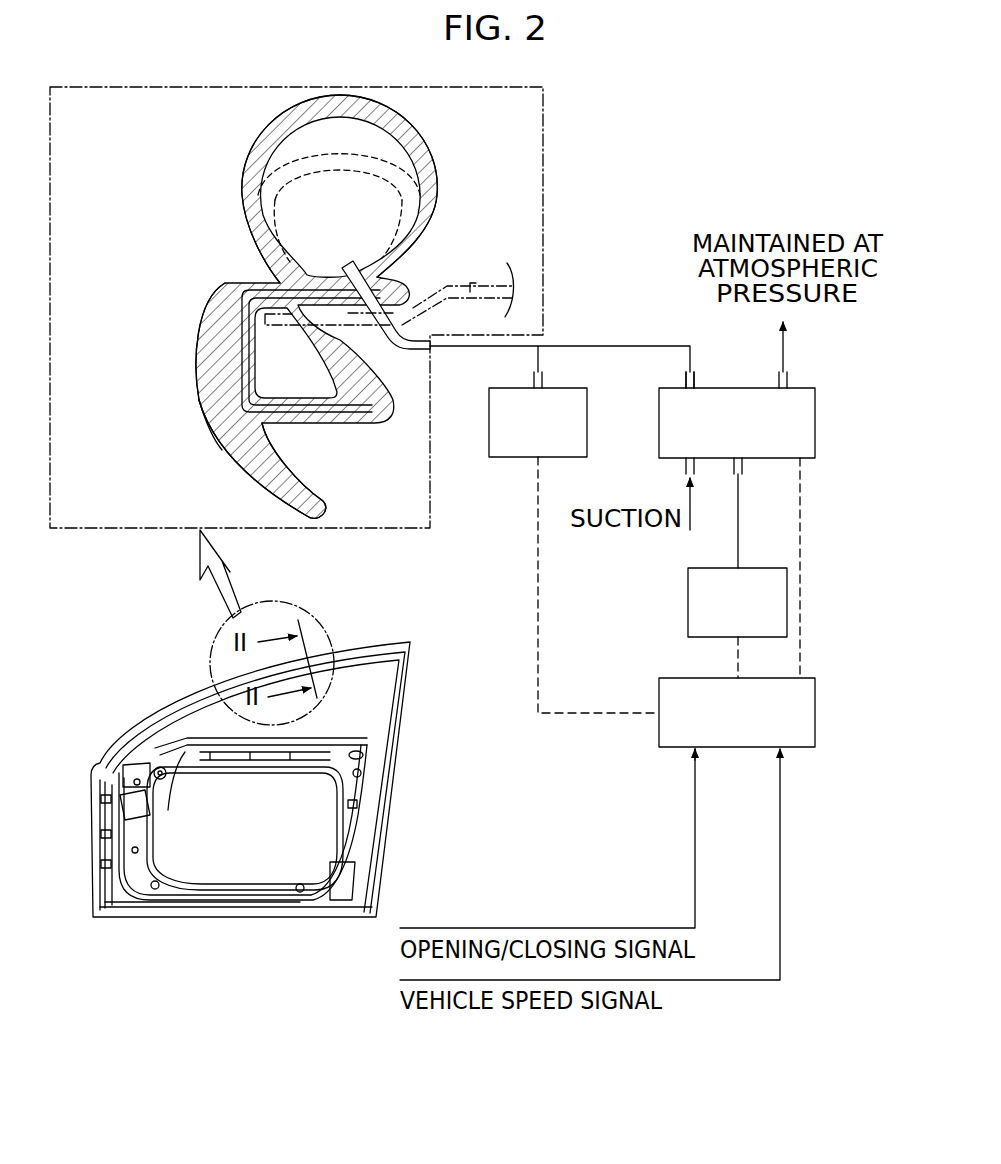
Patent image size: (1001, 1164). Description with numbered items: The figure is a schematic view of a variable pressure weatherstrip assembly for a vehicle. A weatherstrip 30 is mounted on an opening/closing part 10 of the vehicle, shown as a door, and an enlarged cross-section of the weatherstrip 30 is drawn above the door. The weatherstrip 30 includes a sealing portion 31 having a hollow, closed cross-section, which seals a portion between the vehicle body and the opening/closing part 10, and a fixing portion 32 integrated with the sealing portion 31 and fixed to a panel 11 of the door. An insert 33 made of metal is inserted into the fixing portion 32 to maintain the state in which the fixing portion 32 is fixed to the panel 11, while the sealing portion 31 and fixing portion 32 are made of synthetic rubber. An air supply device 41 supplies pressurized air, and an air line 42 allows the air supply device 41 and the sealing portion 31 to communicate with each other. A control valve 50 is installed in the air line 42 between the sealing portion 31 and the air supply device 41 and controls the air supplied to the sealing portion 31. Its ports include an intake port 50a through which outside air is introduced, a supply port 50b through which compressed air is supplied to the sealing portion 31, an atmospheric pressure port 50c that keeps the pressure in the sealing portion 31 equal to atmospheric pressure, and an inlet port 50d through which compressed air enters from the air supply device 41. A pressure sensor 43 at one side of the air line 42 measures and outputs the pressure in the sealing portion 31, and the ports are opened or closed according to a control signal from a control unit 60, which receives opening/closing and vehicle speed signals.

The opening/closing part 10 is at (135, 651).
The panel 11 is at (470, 283).
The weatherstrip 30 is at (265, 474).
The sealing portion 31 is at (250, 186).
The fixing portion 32 is at (215, 318).
The insert 33 is at (206, 381).
The air supply device 41 is at (697, 600).
The air line 42 is at (468, 348).
The pressure sensor 43 is at (508, 442).
The control valve 50 is at (800, 425).
The intake port 50a is at (683, 467).
The supply port 50b is at (698, 378).
The atmospheric pressure port 50c is at (790, 373).
The inlet port 50d is at (745, 470).
The control unit 60 is at (800, 715).